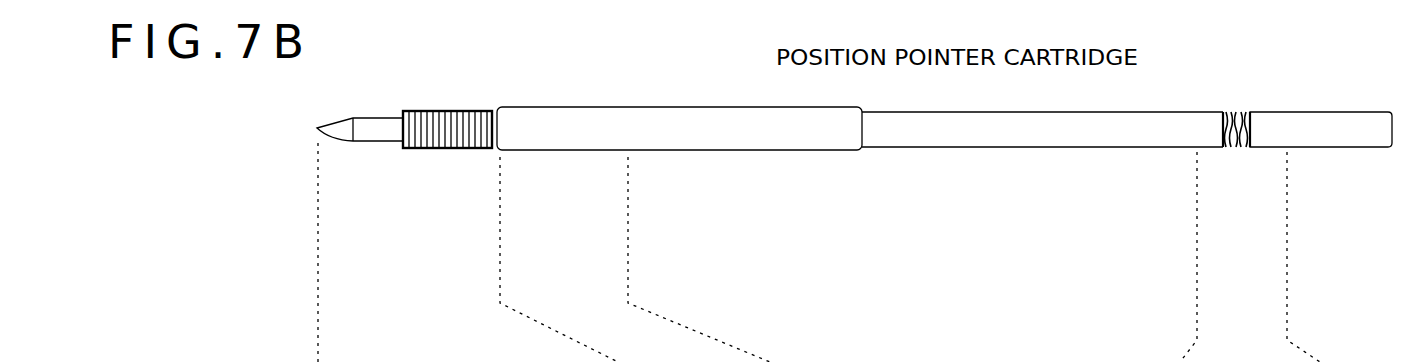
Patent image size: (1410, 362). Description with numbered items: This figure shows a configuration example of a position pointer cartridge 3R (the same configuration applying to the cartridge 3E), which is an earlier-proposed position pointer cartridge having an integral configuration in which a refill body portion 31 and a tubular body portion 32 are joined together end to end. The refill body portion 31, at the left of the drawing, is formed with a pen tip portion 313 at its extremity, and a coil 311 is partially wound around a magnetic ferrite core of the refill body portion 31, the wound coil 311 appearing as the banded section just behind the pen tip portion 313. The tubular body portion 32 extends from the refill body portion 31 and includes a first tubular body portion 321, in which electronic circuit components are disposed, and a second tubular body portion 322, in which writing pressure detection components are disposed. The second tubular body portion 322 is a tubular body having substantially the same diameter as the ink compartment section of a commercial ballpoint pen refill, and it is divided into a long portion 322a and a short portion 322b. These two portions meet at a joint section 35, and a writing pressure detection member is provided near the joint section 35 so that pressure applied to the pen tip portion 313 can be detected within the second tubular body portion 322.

The position pointer cartridge 3R is at (854, 107).
The position pointer cartridge 3E is at (1360, 8).
The refill body portion 31 is at (407, 74).
The pen tip portion 313 is at (377, 127).
The coil 311 is at (447, 102).
The tubular body portion 32 is at (944, 107).
The first tubular body portion 321 is at (778, 140).
The second tubular body portion 322 is at (1127, 102).
The long portion 322a is at (1195, 122).
The short portion 322b is at (1286, 118).
The joint section 35 is at (1236, 150).